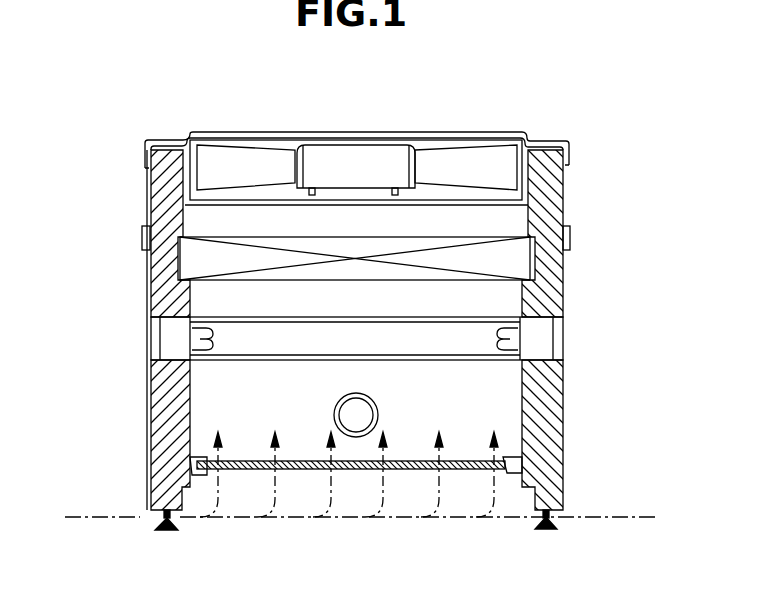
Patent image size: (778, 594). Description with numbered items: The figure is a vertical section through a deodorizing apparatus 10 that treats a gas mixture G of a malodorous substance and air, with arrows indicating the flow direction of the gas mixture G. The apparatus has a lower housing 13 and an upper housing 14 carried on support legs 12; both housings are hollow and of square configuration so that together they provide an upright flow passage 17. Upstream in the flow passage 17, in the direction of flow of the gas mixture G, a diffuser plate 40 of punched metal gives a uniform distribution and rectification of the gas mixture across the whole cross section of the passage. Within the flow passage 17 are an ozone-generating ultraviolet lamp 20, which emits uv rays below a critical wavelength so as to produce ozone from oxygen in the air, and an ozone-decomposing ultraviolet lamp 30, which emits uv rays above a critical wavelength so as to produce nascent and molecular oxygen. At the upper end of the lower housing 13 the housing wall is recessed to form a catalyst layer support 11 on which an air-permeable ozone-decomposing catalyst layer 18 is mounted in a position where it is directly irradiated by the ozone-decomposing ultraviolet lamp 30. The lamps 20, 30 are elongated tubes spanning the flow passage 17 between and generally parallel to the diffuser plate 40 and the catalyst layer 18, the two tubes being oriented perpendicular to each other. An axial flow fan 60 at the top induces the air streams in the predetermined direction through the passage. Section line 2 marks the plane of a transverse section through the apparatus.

The deodorizing apparatus 10 is at (145, 200).
The axial flow fan 60 is at (208, 153).
The catalyst layer support 11 is at (556, 210).
The upper housing 14 is at (556, 219).
The section line 2- 2 is at (138, 238).
The ozone-decomposing catalyst layer 18 is at (186, 280).
The ozone-decomposing ultraviolet lamp 30 is at (540, 352).
The lower housing 13 is at (548, 405).
The flow passage 17 is at (192, 402).
The diffuser plate 40 is at (507, 459).
The ozone-generating ultraviolet lamp 20 is at (356, 437).
The support legs 12 is at (553, 522).
The gas mixture G is at (365, 520).